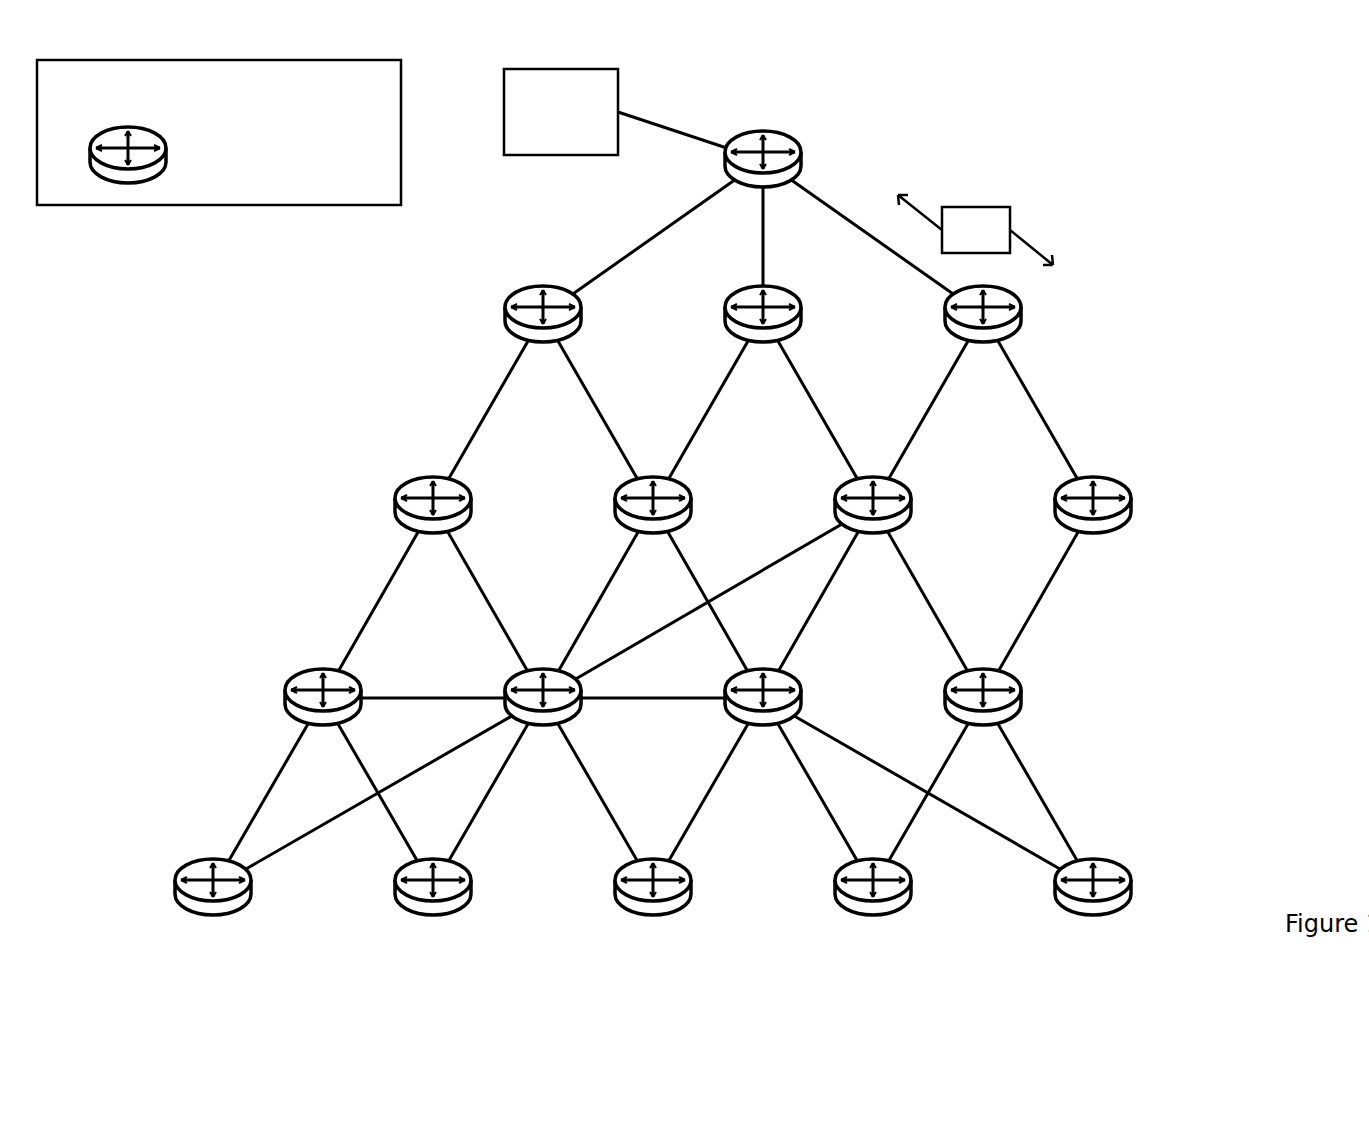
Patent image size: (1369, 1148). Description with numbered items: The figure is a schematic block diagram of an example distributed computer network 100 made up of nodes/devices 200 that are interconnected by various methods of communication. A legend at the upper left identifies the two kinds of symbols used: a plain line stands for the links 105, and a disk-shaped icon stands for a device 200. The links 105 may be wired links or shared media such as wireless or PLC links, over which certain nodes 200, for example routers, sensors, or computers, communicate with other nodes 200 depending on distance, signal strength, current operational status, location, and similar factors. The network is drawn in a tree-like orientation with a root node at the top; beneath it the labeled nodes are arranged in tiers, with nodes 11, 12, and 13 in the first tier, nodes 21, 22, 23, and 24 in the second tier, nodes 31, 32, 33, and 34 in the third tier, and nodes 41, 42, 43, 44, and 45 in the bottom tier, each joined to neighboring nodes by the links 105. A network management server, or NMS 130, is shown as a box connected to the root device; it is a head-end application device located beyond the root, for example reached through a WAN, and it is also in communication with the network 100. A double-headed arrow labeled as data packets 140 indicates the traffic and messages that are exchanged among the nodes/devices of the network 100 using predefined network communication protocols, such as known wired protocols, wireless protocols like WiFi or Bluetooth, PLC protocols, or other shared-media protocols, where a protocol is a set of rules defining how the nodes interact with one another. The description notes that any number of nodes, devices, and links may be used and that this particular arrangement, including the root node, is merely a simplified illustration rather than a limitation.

The computer network 100 is at (1140, 96).
The links 105 is at (77, 96).
The nodes/devices 200 is at (207, 155).
The network management server (NMS) 130 is at (561, 112).
The data packets 140 is at (975, 230).
The node 11 is at (543, 329).
The node 12 is at (763, 329).
The node 13 is at (983, 329).
The node 21 is at (433, 520).
The node 22 is at (653, 520).
The node 23 is at (873, 520).
The node 24 is at (1093, 520).
The node 31 is at (323, 712).
The node 32 is at (543, 712).
The node 33 is at (763, 712).
The node 34 is at (983, 712).
The node 41 is at (213, 902).
The node 42 is at (433, 902).
The node 43 is at (653, 902).
The node 44 is at (873, 902).
The node 45 is at (1093, 902).